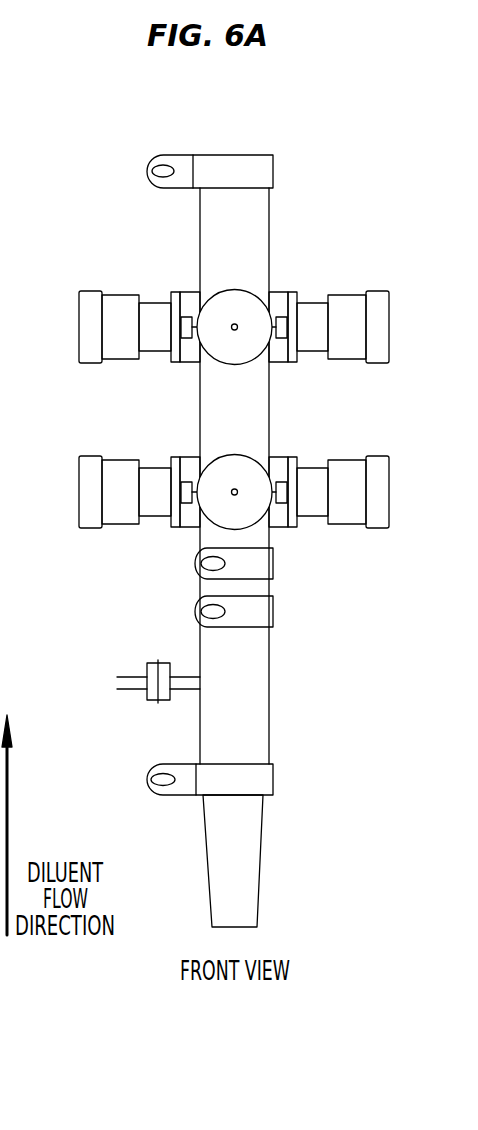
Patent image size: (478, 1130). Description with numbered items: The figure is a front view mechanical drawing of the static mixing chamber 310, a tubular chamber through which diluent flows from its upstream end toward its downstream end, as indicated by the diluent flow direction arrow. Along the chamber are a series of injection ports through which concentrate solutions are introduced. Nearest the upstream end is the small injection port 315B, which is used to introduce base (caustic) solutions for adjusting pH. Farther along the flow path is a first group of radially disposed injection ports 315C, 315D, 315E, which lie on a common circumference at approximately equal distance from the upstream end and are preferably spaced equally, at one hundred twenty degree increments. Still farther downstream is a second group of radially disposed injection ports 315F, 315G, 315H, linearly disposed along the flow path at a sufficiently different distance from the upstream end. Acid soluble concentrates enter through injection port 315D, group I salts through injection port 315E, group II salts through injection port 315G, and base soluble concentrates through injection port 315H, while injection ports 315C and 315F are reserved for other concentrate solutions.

The static mixing chamber 310 is at (310, 676).
The injection port 315B is at (152, 700).
The injection port 315C is at (87, 530).
The injection port 315D is at (238, 530).
The injection port 315E is at (378, 530).
The injection port 315F is at (87, 293).
The injection port 315G is at (233, 364).
The injection port 315H is at (378, 289).